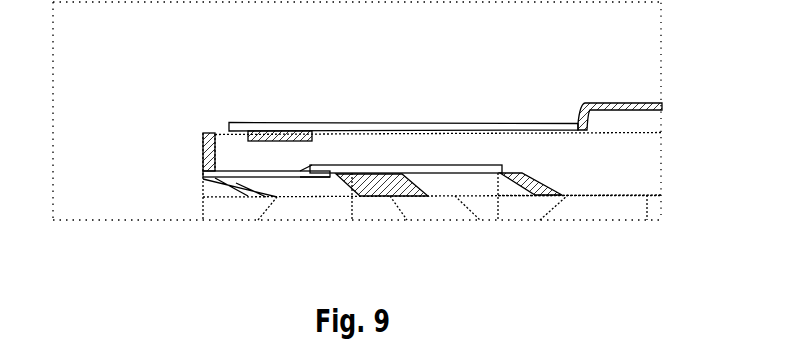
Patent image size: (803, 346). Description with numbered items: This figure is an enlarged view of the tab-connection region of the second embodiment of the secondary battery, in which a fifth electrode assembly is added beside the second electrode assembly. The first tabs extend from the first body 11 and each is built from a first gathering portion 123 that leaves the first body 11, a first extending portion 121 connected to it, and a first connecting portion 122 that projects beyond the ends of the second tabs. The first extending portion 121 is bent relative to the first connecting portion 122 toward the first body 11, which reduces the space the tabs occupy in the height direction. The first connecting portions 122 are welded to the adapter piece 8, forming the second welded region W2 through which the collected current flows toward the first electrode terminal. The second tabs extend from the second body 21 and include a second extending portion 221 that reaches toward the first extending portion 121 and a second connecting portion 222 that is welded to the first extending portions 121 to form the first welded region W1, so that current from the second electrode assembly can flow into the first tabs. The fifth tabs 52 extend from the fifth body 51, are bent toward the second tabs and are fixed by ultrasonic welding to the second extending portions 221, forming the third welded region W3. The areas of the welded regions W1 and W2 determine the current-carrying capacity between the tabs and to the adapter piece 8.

The adapter piece 8 is at (502, 119).
The first body 11 is at (283, 210).
The second body 21 is at (446, 212).
The fifth body 51 is at (633, 196).
The fifth tabs 52 is at (462, 165).
The first extending portion 121 is at (207, 169).
The first connecting portion 122 is at (246, 131).
The first gathering portion 123 is at (204, 200).
The second extending portion 221 is at (300, 170).
The second connecting portion 222 is at (218, 140).
The first welded region W1 is at (208, 147).
The second welded region W2 is at (281, 122).
The third welded region W3 is at (350, 173).